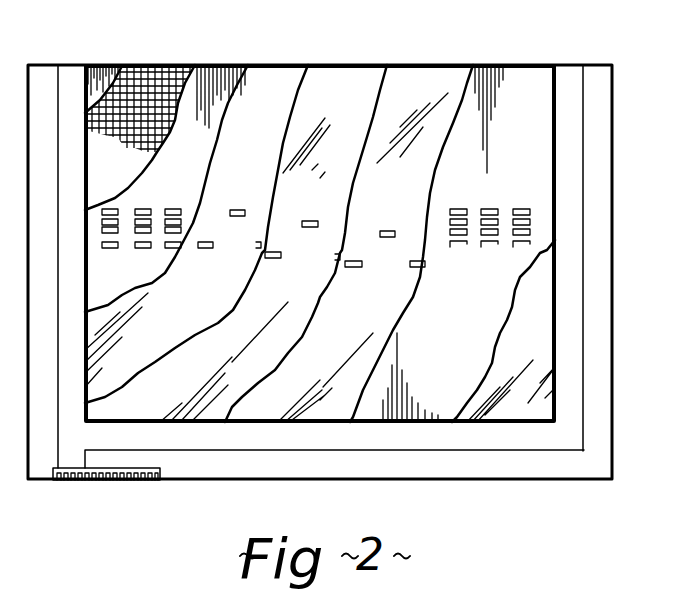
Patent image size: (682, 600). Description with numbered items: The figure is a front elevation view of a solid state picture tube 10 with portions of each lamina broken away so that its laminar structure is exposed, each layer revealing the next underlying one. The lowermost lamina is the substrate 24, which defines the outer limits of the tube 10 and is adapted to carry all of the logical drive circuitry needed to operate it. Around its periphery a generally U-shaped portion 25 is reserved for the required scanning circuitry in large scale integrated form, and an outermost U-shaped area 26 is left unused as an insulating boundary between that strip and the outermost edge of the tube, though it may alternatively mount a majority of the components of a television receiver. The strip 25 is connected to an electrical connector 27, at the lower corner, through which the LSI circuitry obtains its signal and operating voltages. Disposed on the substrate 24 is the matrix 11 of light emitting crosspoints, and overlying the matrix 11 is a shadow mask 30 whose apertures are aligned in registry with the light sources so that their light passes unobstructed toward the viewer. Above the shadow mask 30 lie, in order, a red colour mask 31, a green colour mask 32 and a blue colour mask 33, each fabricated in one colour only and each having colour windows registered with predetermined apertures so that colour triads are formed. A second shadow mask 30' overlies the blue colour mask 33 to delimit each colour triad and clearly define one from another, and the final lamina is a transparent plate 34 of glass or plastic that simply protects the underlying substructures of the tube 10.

The tube 10 is at (657, 205).
The matrix 11 is at (152, 72).
The substrate 24 is at (103, 72).
The U-shaped portion 25 is at (567, 75).
The outermost U-shaped area 26 is at (598, 85).
The electrical connector 27 is at (55, 470).
The shadow mask 30 is at (165, 114).
The shadow mask 30' is at (447, 220).
The red colour mask 31 is at (272, 78).
The green colour mask 32 is at (345, 80).
The blue colour mask 33 is at (417, 80).
The transparent plate 34 is at (543, 323).